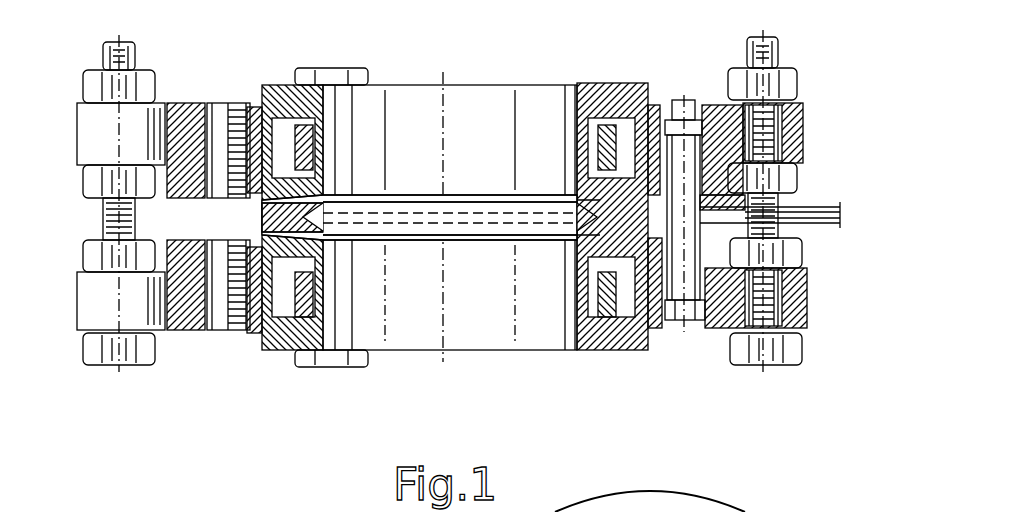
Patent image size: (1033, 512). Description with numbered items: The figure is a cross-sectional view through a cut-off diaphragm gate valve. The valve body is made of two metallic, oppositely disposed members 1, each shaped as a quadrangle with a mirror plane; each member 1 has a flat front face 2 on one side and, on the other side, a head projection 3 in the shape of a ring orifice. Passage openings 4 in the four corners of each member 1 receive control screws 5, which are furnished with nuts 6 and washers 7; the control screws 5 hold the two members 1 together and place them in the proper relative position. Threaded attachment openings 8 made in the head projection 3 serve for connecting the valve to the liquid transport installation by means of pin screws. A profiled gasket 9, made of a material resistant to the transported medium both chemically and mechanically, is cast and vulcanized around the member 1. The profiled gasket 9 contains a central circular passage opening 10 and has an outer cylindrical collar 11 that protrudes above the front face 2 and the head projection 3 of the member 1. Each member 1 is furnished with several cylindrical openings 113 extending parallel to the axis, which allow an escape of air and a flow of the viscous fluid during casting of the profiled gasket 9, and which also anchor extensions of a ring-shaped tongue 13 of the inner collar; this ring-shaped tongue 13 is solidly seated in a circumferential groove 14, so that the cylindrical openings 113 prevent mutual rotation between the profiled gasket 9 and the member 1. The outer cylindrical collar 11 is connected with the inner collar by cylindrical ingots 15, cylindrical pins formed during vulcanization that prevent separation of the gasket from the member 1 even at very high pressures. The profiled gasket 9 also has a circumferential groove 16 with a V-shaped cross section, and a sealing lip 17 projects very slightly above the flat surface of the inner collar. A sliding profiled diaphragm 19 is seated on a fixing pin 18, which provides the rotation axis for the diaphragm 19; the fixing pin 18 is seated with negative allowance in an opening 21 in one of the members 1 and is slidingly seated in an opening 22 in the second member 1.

The member 1 is at (805, 122).
The front face 2 is at (175, 103).
The head projection 3 is at (780, 210).
The passage openings 4 is at (810, 295).
The control screws 5 is at (105, 52).
The nuts 6 is at (88, 78).
The washers 7 is at (85, 103).
The threaded attachment openings 8 is at (222, 103).
The profiled gasket 9 is at (305, 352).
The central circular passage opening 10 is at (380, 352).
The outer cylindrical collar 11 is at (640, 352).
The ring-shaped tongue 13 is at (262, 352).
The circumferential groove 14 is at (263, 365).
The cylindrical ingots 15 is at (264, 85).
The circumferential groove 16 is at (483, 195).
The sealing lip 17 is at (262, 215).
The fixing pin 18 is at (690, 105).
The sliding profiled diaphragm 19 is at (810, 212).
The opening 21 is at (700, 328).
The opening 22 is at (670, 105).
The cylindrical openings 113 is at (605, 85).